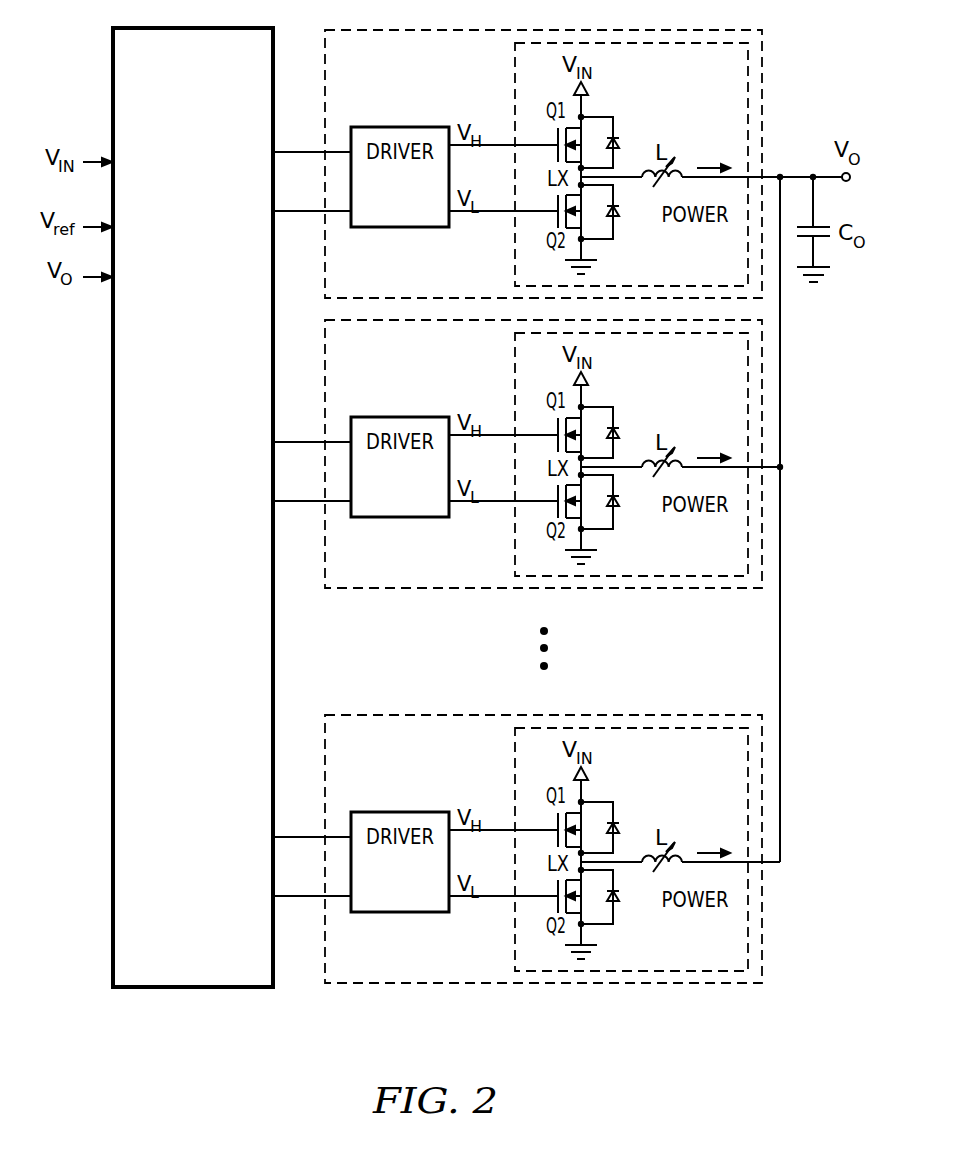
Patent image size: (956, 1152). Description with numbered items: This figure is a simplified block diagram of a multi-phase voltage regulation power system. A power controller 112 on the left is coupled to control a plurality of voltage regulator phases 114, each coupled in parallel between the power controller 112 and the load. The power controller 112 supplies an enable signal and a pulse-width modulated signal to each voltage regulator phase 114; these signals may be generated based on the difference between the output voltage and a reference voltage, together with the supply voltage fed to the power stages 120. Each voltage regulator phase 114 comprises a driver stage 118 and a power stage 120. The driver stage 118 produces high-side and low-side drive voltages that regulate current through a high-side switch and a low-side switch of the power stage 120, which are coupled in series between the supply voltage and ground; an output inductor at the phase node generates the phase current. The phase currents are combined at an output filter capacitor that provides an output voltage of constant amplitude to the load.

The power controller 112 is at (175, 560).
The voltage regulator phase 114 is at (383, 285).
The driver stage 118 is at (383, 207).
The power stage 120 is at (679, 275).